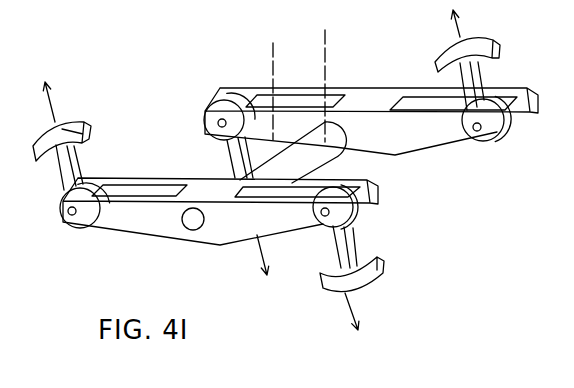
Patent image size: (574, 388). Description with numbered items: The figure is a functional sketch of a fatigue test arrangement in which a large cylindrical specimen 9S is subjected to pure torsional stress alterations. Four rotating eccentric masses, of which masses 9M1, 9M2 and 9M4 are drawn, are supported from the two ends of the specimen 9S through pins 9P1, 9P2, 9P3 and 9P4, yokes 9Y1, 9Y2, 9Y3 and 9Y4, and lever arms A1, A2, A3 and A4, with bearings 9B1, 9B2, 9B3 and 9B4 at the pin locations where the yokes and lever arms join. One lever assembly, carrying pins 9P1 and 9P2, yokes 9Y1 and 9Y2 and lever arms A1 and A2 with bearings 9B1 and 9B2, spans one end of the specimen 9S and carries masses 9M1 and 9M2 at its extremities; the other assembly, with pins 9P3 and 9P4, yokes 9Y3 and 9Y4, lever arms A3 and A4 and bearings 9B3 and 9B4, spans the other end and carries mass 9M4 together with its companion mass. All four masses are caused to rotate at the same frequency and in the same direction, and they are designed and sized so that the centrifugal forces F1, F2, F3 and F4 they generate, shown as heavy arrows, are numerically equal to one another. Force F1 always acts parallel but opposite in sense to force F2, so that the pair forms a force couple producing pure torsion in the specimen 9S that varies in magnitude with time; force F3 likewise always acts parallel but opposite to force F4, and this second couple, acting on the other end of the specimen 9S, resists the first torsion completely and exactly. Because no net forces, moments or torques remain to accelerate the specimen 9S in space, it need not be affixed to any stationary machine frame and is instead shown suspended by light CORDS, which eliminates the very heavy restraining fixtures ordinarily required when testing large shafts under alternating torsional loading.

The bearing 9B1 is at (77, 232).
The bearing 9B2 is at (356, 212).
The bearing 9B3 is at (230, 93).
The bearing 9B4 is at (484, 142).
The pin 9P1 is at (84, 214).
The pin 9P2 is at (310, 218).
The pin 9P3 is at (233, 129).
The pin 9P4 is at (474, 135).
The yoke 9Y1 is at (220, 211).
The yoke 9Y2 is at (220, 211).
The yoke 9Y3 is at (371, 134).
The yoke 9Y4 is at (371, 134).
The lever arm A1 is at (220, 211).
The lever arm A2 is at (220, 211).
The lever arm A3 is at (371, 134).
The lever arm A4 is at (376, 155).
The rotating eccentric mass 9M1 is at (100, 98).
The rotating eccentric mass 9M2 is at (332, 295).
The rotating eccentric mass 9M4 is at (498, 55).
The cylindrical specimen 9S is at (308, 163).
The light cords CORDS is at (307, 86).
The centrifugal force F1 is at (36, 101).
The centrifugal force F2 is at (363, 326).
The centrifugal force F3 is at (270, 269).
The centrifugal force F4 is at (469, 20).